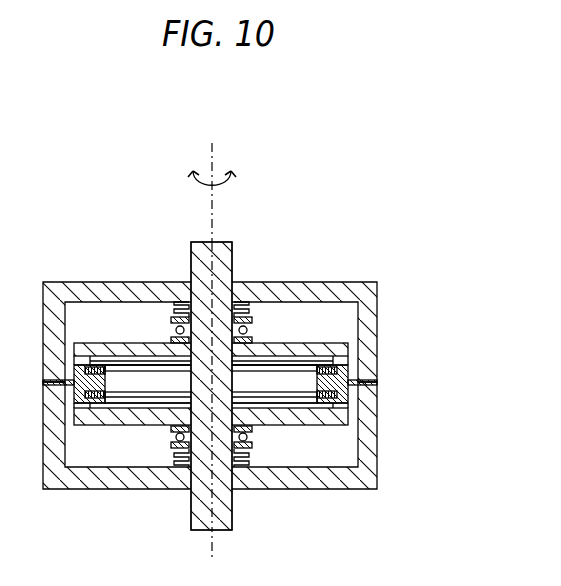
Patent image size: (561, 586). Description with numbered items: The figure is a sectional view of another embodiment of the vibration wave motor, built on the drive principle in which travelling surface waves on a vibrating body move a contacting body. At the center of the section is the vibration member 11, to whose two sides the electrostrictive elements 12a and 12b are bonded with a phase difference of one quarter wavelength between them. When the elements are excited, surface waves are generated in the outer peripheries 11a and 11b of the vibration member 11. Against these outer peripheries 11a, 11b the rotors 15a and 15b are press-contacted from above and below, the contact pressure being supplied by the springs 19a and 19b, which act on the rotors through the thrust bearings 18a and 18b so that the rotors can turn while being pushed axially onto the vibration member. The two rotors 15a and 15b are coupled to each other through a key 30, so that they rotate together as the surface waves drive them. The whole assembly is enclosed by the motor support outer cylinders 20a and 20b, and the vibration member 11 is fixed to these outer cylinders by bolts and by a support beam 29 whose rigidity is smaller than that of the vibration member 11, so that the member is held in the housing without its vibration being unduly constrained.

The motor support outer cylinder 20a is at (372, 290).
The motor support outer cylinder 20b is at (302, 480).
The support beam 29 is at (360, 384).
The electrostrictive element 12a is at (330, 345).
The electrostrictive element 12b is at (327, 425).
The rotor 15a is at (347, 352).
The rotor 15b is at (348, 406).
The key 30 is at (188, 358).
The vibration member 11 is at (355, 380).
The outer periphery of the vibration member 11a is at (350, 368).
The outer periphery of the vibration member 11b is at (352, 396).
The thrust bearing 18a is at (172, 320).
The thrust bearing 18b is at (168, 445).
The spring 19a is at (242, 308).
The spring 19b is at (247, 456).